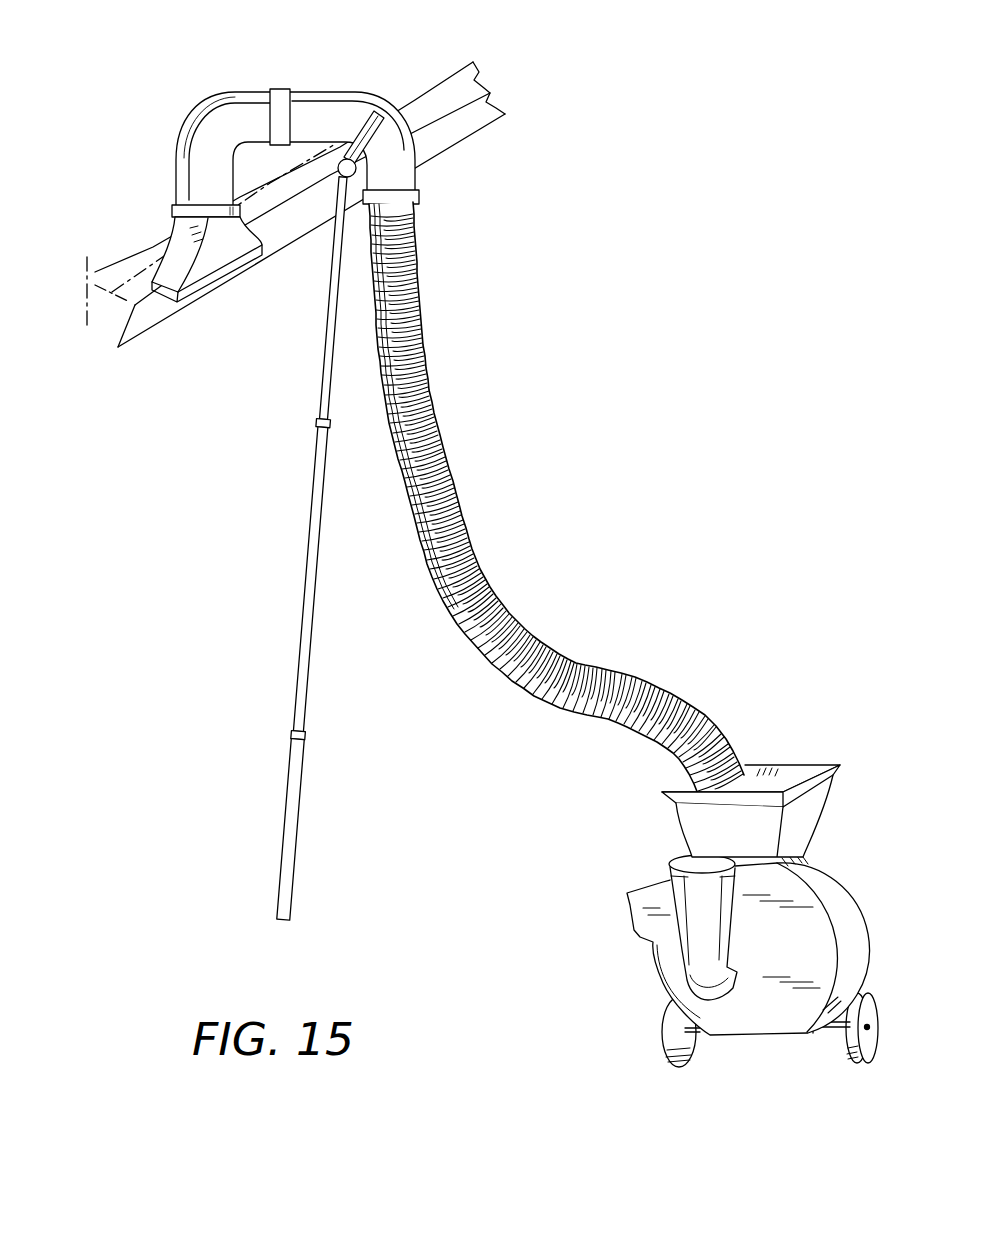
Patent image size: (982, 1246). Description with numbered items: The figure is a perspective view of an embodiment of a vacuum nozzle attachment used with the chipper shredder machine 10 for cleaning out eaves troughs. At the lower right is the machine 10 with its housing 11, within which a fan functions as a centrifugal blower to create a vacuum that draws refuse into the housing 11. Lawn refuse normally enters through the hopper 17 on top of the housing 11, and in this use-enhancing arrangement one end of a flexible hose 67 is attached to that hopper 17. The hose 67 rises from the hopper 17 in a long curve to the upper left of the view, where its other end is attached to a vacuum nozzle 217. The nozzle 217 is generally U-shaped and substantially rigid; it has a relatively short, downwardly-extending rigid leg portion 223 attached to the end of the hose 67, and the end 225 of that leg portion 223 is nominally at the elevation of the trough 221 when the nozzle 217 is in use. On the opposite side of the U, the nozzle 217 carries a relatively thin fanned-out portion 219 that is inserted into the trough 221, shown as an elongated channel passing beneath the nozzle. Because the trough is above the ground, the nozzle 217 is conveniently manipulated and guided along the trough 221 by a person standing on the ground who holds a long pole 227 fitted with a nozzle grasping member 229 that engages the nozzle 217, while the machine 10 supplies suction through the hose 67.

The chipper shredder machine 10 is at (717, 839).
The housing 11 is at (823, 884).
The hopper 17 is at (773, 766).
The flexible hose 67 is at (432, 352).
The vacuum nozzle 217 is at (344, 225).
The fanned-out portion 219 is at (207, 290).
The trough 221 is at (112, 325).
The leg portion 223 is at (400, 168).
The end 225 is at (415, 197).
The pole 227 is at (313, 468).
The nozzle grasping member 229 is at (378, 112).